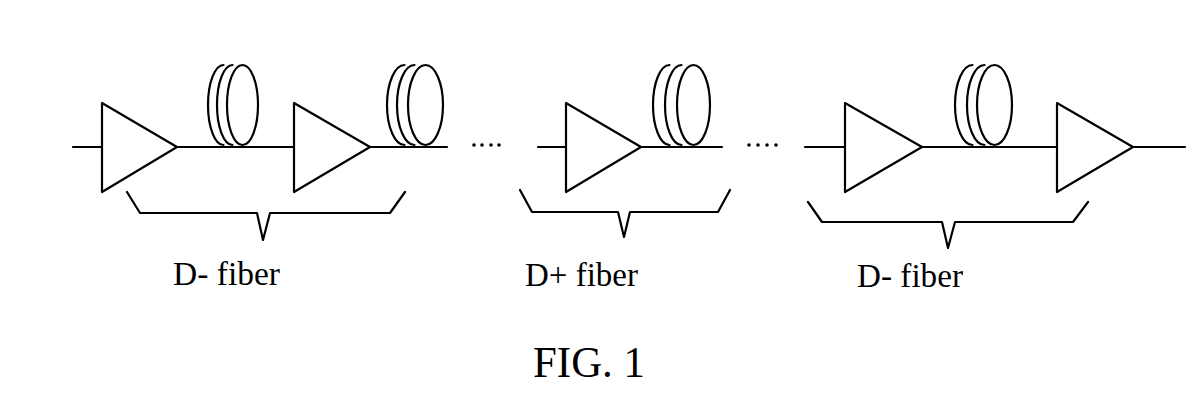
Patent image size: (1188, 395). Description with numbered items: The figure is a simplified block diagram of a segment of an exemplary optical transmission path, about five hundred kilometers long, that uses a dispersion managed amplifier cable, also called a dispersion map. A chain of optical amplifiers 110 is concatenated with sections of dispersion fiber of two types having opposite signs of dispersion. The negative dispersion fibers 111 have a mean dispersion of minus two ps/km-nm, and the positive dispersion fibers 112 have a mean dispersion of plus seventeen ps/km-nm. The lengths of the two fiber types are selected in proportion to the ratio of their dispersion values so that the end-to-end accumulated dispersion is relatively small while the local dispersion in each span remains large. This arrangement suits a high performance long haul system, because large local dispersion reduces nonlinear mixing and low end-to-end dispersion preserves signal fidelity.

The optical amplifier 110 is at (300, 106).
The negative dispersion fiber 111 is at (230, 64).
The positive dispersion fiber 112 is at (700, 68).